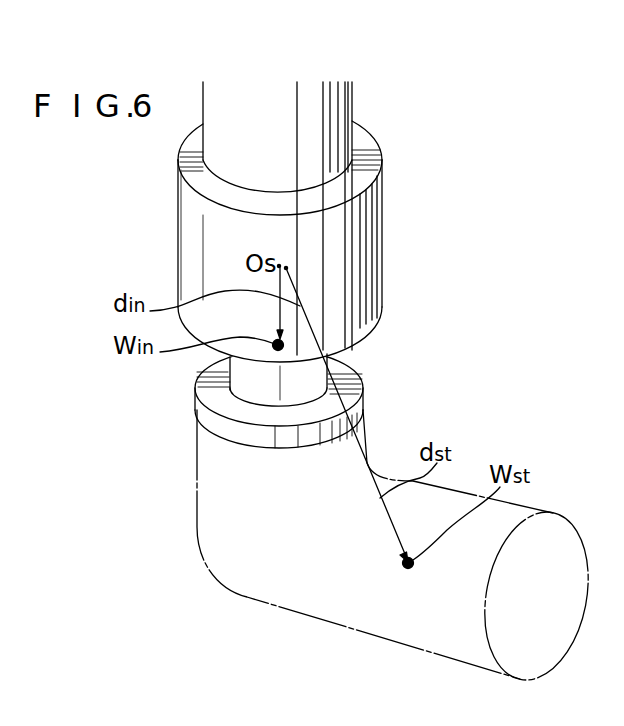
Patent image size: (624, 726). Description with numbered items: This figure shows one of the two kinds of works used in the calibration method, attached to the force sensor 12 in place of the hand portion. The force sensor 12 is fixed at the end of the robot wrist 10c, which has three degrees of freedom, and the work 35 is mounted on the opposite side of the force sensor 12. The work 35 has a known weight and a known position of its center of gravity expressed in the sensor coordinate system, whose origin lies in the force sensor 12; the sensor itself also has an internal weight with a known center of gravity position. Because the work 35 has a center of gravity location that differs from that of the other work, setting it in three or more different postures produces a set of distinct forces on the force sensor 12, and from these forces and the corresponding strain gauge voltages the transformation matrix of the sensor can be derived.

The wrist 10c is at (335, 102).
The force sensor 12 is at (358, 250).
The work 35 is at (376, 612).